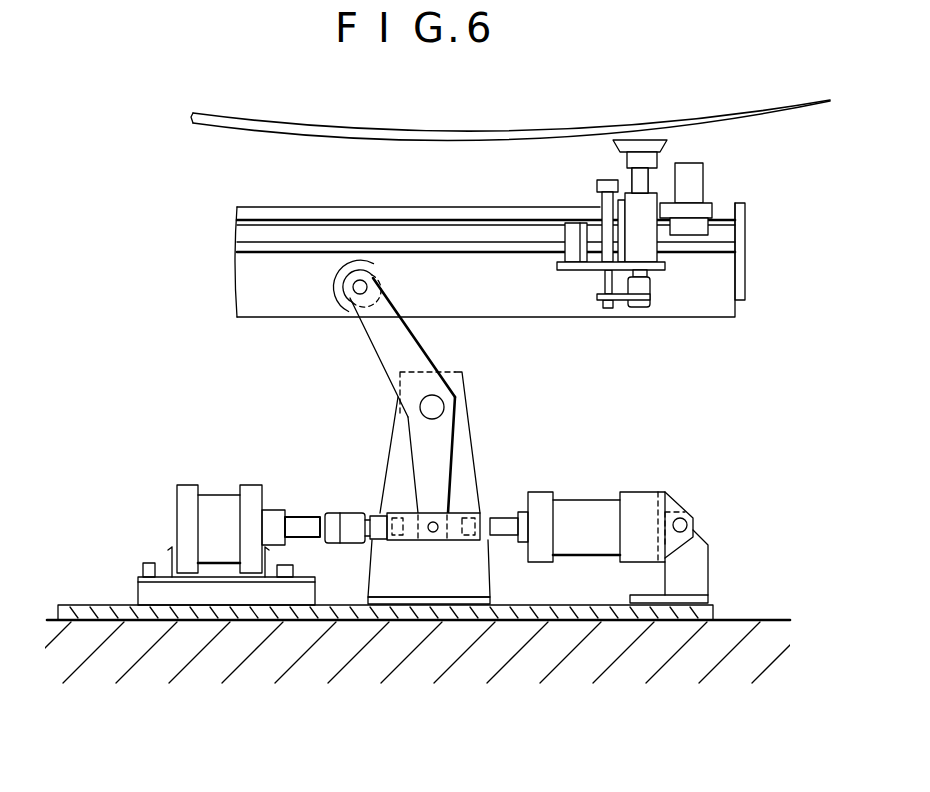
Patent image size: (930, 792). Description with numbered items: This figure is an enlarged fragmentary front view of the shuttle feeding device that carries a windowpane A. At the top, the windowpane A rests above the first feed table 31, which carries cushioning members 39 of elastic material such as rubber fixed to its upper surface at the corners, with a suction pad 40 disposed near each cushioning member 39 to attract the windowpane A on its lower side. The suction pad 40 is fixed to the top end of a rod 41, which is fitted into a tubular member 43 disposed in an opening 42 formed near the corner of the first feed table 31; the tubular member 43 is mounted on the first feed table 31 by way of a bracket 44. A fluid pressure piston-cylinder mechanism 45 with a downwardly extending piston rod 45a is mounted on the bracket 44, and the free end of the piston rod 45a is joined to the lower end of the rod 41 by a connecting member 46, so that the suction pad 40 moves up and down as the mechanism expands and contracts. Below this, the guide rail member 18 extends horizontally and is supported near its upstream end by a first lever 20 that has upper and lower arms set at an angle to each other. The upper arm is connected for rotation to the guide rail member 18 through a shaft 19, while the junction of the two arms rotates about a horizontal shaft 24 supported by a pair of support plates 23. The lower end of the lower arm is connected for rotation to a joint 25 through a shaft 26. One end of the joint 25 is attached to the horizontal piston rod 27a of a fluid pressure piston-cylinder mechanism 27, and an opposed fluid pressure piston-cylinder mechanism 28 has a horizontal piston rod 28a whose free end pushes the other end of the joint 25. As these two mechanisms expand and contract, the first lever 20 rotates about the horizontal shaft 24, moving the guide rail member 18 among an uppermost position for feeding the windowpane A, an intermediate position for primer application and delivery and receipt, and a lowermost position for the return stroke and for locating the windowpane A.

The windowpane A is at (413, 132).
The guide rail member 18 is at (287, 270).
The shaft 19 is at (372, 280).
The first lever 20 is at (412, 343).
The support plates 23 is at (463, 442).
The horizontal shaft 24 is at (420, 412).
The joint 25 is at (410, 537).
The shaft 26 is at (448, 542).
The fluid pressure piston-cylinder mechanism 27 is at (592, 508).
The horizontal piston rod 27a is at (502, 537).
The fluid pressure piston-cylinder mechanism 28 is at (223, 502).
The horizontal piston rod 28a is at (307, 520).
The first feed table 31 is at (412, 213).
The cushioning member 39 is at (707, 180).
The suction pad 40 is at (653, 138).
The rod 41 is at (657, 172).
The opening 42 is at (597, 200).
The tubular member 43 is at (667, 252).
The bracket 44 is at (565, 270).
The fluid pressure piston-cylinder mechanism 45 is at (608, 180).
The piston rod 45a is at (600, 282).
The connecting member 46 is at (620, 303).